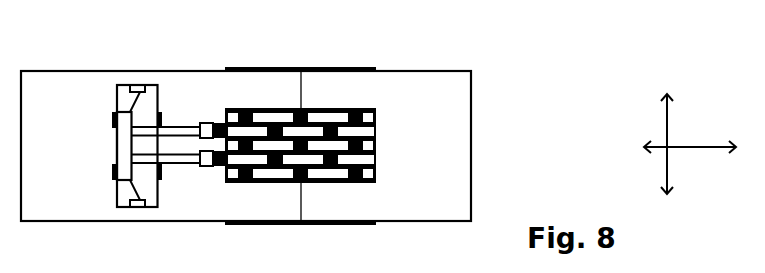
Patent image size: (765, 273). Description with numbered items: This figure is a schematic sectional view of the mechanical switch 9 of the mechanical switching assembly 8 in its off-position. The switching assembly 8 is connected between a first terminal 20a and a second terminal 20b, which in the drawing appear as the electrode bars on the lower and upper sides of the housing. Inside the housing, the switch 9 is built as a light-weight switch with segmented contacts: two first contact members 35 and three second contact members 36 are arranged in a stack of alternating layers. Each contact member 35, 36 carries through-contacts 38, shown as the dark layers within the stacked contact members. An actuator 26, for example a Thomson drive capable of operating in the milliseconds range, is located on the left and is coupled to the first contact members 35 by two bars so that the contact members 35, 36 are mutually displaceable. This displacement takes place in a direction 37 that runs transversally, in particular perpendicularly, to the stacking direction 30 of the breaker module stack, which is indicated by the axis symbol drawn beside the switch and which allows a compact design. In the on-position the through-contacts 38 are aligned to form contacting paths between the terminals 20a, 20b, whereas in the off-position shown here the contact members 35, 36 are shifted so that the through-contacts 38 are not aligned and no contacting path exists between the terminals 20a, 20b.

The mechanical switching assembly 8 is at (287, 142).
The mechanical switch 9 is at (380, 87).
The first terminal 20a is at (278, 247).
The second terminal 20b is at (293, 42).
The actuator 26 is at (143, 117).
The stacking direction 30 is at (639, 140).
The first contact member 35 is at (380, 158).
The second contact member 36 is at (394, 139).
The direction 37 is at (690, 128).
The through-contacts 38 is at (378, 101).